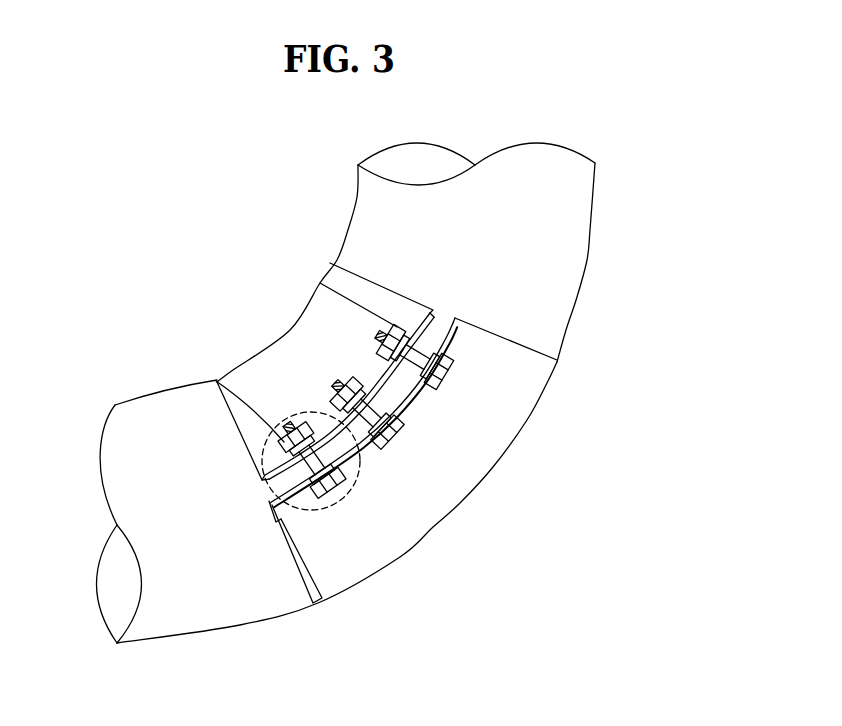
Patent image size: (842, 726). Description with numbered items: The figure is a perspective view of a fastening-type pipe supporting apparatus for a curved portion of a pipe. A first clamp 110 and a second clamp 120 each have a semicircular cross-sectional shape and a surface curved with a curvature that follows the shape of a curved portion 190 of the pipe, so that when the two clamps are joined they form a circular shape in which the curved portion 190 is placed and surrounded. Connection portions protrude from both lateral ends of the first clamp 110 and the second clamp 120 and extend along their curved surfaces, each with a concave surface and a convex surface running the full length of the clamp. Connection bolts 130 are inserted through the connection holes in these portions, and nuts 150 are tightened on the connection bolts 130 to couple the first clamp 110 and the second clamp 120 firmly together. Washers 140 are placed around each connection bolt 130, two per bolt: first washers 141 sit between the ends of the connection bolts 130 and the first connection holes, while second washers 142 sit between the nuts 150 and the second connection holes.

The first clamp 110 is at (450, 495).
The curved portion of a pipe 190 is at (563, 295).
The second clamp 120 is at (293, 337).
The connection bolts 130 is at (445, 373).
The washers 140 is at (386, 483).
The first washers 141 is at (302, 500).
The second washers 142 is at (273, 497).
The nuts 150 is at (383, 333).